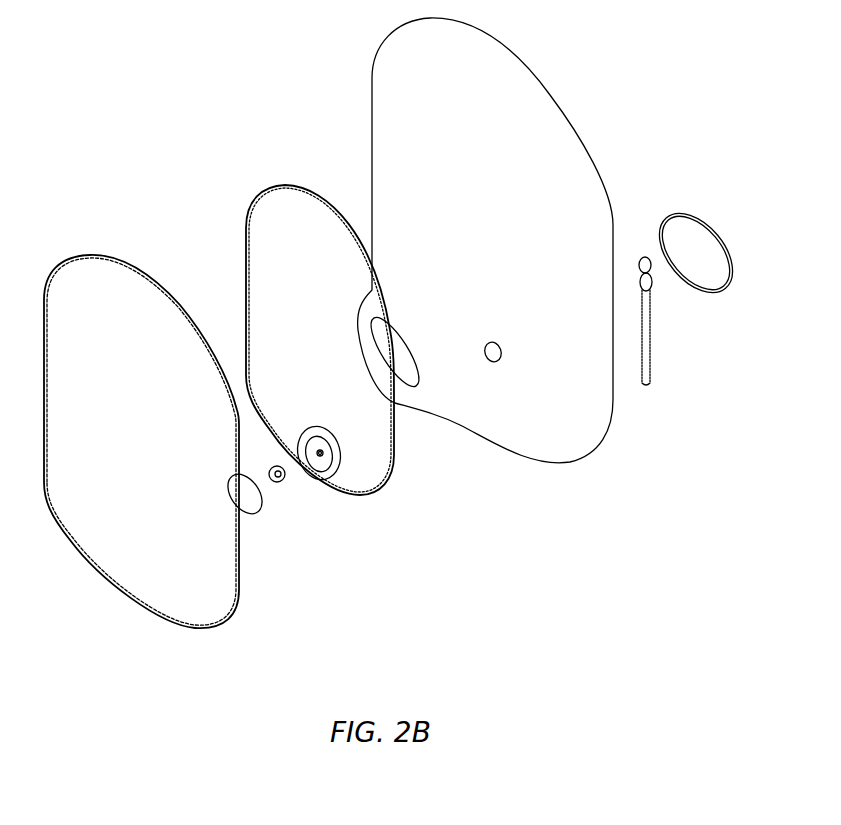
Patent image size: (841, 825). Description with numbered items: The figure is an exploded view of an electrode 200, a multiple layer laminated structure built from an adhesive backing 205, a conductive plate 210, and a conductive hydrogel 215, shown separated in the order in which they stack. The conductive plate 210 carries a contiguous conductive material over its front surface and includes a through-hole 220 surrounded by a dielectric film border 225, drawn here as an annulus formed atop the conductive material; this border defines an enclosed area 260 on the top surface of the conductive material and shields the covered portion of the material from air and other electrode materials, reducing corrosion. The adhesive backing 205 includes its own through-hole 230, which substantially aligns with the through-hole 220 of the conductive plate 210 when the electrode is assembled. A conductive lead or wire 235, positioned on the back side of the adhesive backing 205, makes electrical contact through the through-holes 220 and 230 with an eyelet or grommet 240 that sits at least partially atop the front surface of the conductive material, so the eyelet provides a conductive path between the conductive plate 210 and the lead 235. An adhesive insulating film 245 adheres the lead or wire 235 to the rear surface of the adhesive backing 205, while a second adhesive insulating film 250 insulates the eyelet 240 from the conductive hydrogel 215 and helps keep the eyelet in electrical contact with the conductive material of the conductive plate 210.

The electrode 200 is at (185, 165).
The adhesive backing 205 is at (457, 113).
The conductive plate 210 is at (304, 240).
The conductive hydrogel 215 is at (107, 314).
The through-hole 220 is at (325, 451).
The dielectric film border 225 is at (334, 468).
The through-hole 230 is at (494, 362).
The conductive lead or wire 235 is at (650, 345).
The eyelet or grommet 240 is at (280, 484).
The adhesive insulating film 245 is at (686, 225).
The second adhesive insulating film 250 is at (251, 508).
The enclosed area 260 is at (326, 462).